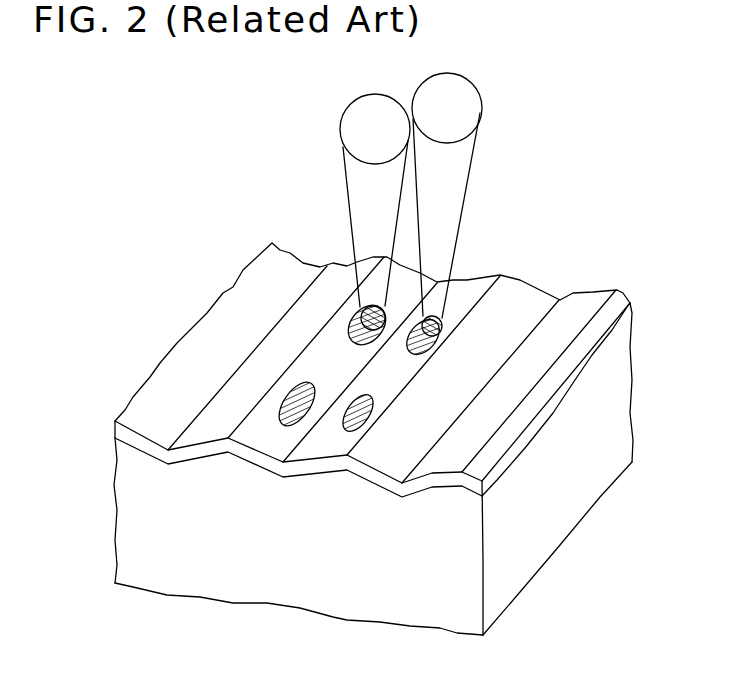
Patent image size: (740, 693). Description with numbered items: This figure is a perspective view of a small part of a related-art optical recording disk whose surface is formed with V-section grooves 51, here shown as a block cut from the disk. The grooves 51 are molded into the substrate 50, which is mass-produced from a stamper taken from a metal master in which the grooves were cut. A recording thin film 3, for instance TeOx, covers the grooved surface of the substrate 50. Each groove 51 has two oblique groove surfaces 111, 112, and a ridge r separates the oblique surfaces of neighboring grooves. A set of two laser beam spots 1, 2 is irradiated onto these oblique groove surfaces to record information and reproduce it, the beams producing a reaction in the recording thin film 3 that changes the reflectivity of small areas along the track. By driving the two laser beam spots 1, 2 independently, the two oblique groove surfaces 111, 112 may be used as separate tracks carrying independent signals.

The laser beam spot 1 is at (352, 119).
The laser beam spot 2 is at (469, 109).
The recording thin film 3 is at (115, 425).
The substrate 50 is at (131, 501).
The V-section groove 51 is at (155, 440).
The oblique groove surface 111 is at (323, 355).
The oblique groove surface 112 is at (463, 292).
The ridge r is at (328, 313).